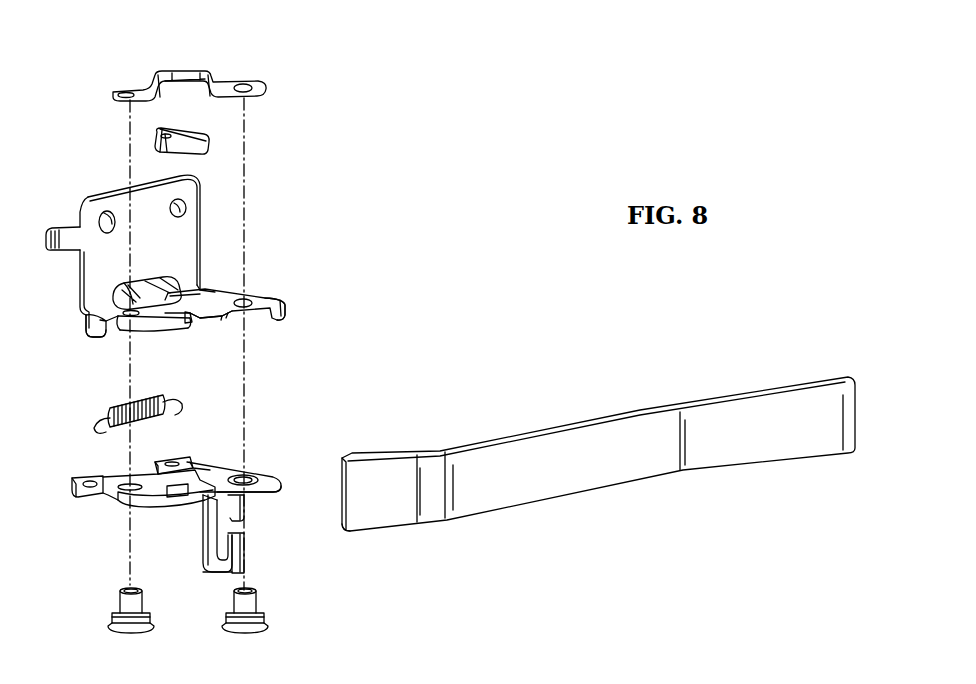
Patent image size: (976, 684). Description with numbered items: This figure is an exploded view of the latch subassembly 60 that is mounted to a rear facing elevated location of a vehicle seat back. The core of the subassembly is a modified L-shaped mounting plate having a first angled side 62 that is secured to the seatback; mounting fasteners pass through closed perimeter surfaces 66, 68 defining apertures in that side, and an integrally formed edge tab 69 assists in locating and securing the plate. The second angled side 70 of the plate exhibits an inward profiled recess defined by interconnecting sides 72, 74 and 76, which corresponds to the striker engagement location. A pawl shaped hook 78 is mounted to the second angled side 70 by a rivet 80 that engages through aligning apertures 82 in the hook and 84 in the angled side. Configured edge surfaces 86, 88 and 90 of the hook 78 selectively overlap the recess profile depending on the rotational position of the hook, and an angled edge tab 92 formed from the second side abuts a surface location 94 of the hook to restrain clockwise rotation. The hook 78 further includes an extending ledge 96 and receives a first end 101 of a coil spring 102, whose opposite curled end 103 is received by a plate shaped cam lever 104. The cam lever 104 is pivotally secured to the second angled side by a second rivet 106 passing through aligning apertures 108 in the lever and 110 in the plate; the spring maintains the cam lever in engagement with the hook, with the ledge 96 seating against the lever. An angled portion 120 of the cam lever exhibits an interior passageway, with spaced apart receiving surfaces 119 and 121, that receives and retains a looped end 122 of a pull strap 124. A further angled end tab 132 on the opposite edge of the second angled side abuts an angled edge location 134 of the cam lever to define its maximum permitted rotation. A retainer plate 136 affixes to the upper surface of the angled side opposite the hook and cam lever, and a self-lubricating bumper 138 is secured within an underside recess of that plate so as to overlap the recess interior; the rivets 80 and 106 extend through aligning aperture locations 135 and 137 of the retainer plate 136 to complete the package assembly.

The latch subassembly 60 is at (362, 194).
The first angled side 62 is at (88, 280).
The closed perimeter extending surface defining aperture 66 is at (103, 214).
The closed perimeter extending surface defining aperture 68 is at (183, 211).
The edge tab 69 is at (45, 238).
The second angled side 70 is at (207, 294).
The interconnecting side 72 is at (218, 319).
The interconnecting side 74 is at (192, 318).
The interconnecting side 76 is at (178, 323).
The pawl shaped hook 78 is at (145, 510).
The rivet 80 is at (114, 618).
The aperture 82 is at (125, 498).
The aperture 84 is at (121, 318).
The configured edge surface 86 is at (185, 480).
The configured edge surface 88 is at (181, 500).
The configured edge surface 90 is at (210, 508).
The angled edge tab 92 is at (86, 333).
The surface location 94 is at (99, 500).
The extending ledge 96 is at (169, 464).
The first end 101 is at (98, 432).
The coil spring 102 is at (140, 417).
The second curled and extending end 103 is at (175, 398).
The plate shaped cam lever 104 is at (236, 468).
The second rivet 106 is at (256, 618).
The aperture 108 is at (262, 475).
The aperture 110 is at (251, 299).
The receiving surface 119 is at (248, 540).
The angled portion 120 is at (215, 575).
The receiving surface 121 is at (246, 505).
The looped end 122 is at (347, 531).
The pull strap 124 is at (580, 487).
The angled end tab 132 is at (282, 316).
The angled edge location 134 is at (253, 469).
The aligning aperture location 135 is at (127, 92).
The retainer plate 136 is at (156, 76).
The aligning aperture location 137 is at (249, 85).
The self-lubricating bumper 138 is at (180, 130).